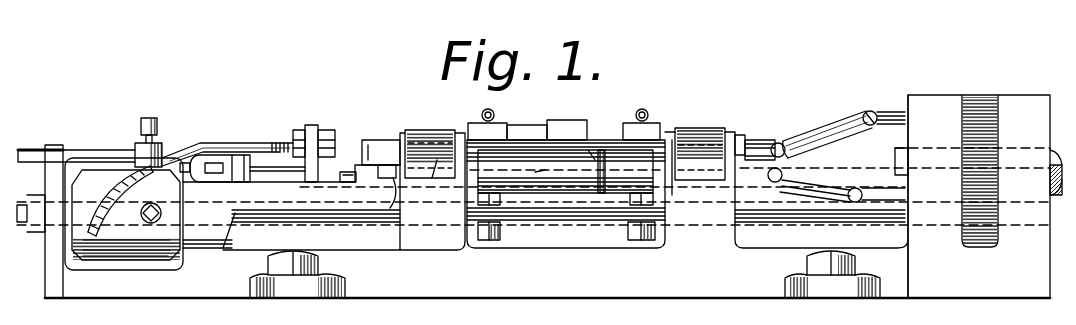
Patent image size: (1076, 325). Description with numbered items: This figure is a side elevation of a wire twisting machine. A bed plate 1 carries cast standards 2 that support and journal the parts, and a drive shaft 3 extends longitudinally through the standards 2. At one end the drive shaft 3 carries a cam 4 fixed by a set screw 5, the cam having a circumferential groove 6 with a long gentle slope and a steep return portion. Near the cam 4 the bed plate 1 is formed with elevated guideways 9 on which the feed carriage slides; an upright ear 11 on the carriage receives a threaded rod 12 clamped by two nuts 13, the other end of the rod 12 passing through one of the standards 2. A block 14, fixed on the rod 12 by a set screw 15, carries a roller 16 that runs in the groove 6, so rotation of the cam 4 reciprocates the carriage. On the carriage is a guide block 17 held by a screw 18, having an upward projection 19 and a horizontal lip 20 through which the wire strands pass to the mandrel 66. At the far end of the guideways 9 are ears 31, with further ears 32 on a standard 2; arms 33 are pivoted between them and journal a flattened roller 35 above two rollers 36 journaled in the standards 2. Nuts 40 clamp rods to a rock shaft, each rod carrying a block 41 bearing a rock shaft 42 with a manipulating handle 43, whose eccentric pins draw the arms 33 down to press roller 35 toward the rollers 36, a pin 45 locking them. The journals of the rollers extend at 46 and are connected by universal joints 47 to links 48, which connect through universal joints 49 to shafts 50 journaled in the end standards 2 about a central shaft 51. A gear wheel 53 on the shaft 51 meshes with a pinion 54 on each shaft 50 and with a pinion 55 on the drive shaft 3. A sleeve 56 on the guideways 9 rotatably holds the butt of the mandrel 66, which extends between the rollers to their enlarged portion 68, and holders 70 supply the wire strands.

The bed plate 1 is at (517, 290).
The standards 2 is at (458, 234).
The drive shaft 3 is at (786, 215).
The cam 4 is at (183, 262).
The set screw 5 is at (150, 224).
The circumferential groove 6 is at (110, 252).
The guideways 9 is at (313, 197).
The upright ear 11 is at (312, 125).
The rod 12 is at (245, 147).
The nuts 13 is at (325, 130).
The block 14 is at (163, 150).
The set screw 15 is at (150, 118).
The roller 16 is at (136, 164).
The block 17 is at (362, 182).
The screw or bolt 18 is at (350, 170).
The upward projection 19 is at (380, 145).
The lip 20 is at (398, 194).
The upwardly-projecting ears 31 is at (447, 110).
The ears 32 is at (740, 128).
The arms 33 is at (568, 167).
The roller 35 is at (588, 150).
The rollers 36 is at (592, 183).
The nuts 40 is at (641, 242).
The block 41 is at (497, 132).
The rock-shaft 42 is at (520, 130).
The manipulating handle 43 is at (567, 131).
The pin 45 is at (649, 115).
The journal extensions 46 is at (757, 138).
The universal joints 47 is at (798, 133).
The links 48 is at (863, 113).
The universal joints 49 is at (878, 118).
The shafts 50 is at (908, 100).
The shaft 51 is at (898, 156).
The gear wheel 53 is at (990, 160).
The pinion 54 is at (985, 100).
The pinion 55 is at (985, 232).
The sleeve 56 is at (215, 158).
The mandrel 66 is at (546, 172).
The enlarged portion 68 is at (603, 195).
The holders 70 is at (481, 288).